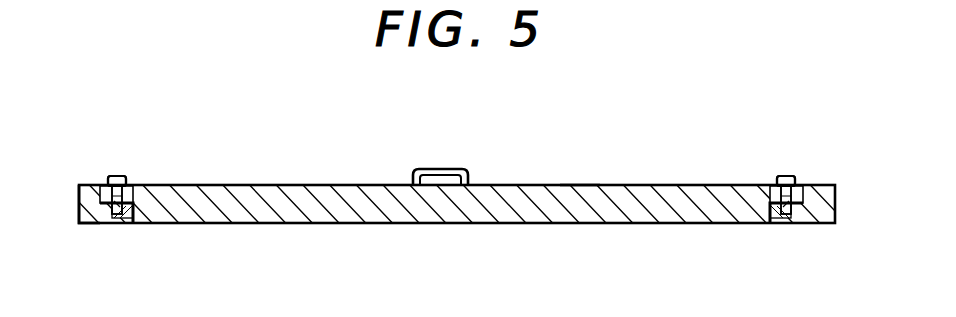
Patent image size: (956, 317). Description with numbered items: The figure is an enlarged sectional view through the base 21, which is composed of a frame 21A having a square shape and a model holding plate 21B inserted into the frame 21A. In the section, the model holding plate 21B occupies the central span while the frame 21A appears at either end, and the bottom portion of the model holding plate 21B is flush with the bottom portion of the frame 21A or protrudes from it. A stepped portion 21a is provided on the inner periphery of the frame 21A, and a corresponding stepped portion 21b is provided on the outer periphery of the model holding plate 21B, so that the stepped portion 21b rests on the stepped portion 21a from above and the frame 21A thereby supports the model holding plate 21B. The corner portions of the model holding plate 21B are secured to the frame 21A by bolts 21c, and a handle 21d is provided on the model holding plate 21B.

The base 21 is at (379, 181).
The frame 21A is at (80, 224).
The model holding plate 21B is at (593, 184).
The stepped portion 21a is at (128, 203).
The stepped portion 21b is at (110, 217).
The bolts 21c is at (117, 175).
The handles 21d is at (440, 168).